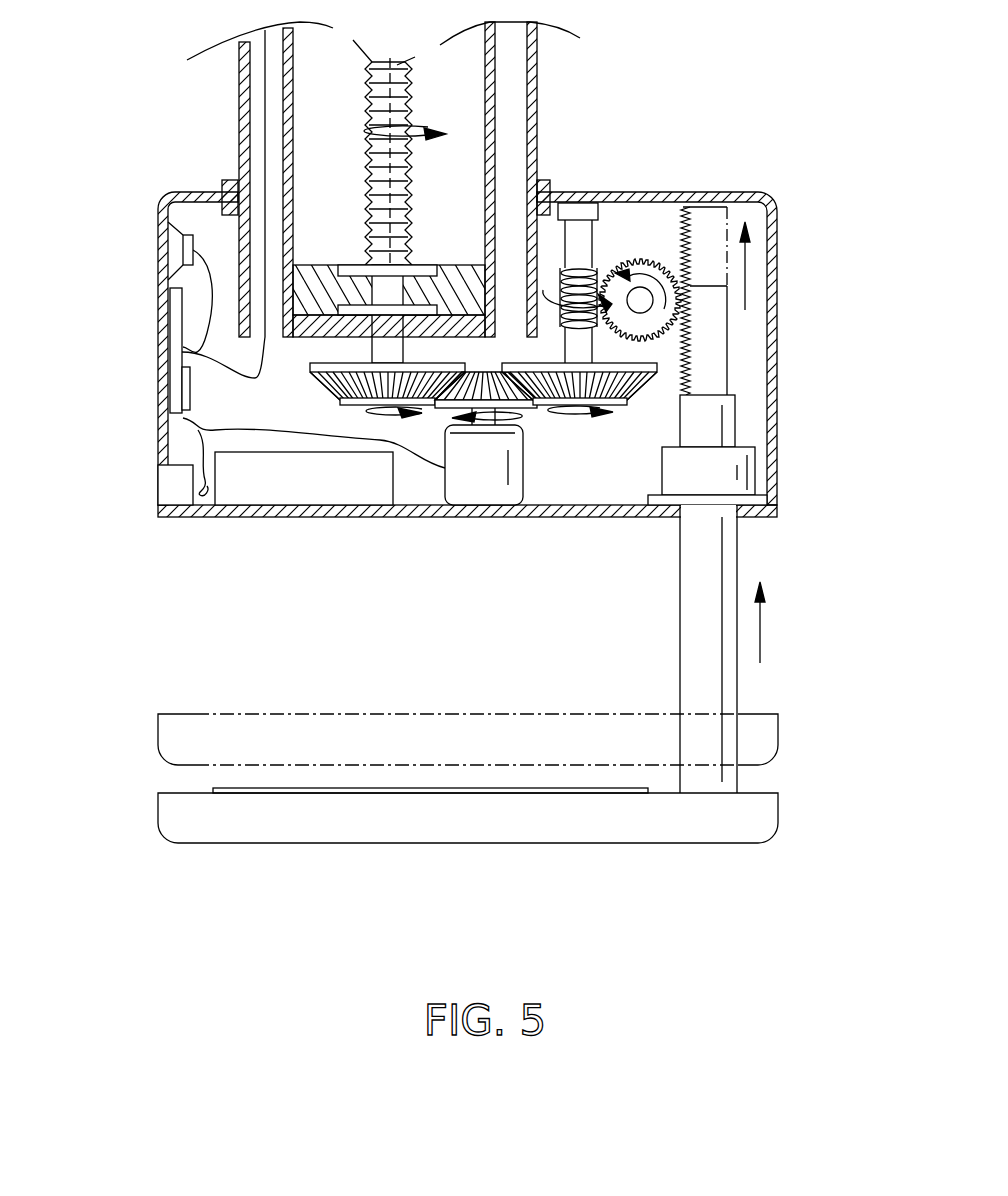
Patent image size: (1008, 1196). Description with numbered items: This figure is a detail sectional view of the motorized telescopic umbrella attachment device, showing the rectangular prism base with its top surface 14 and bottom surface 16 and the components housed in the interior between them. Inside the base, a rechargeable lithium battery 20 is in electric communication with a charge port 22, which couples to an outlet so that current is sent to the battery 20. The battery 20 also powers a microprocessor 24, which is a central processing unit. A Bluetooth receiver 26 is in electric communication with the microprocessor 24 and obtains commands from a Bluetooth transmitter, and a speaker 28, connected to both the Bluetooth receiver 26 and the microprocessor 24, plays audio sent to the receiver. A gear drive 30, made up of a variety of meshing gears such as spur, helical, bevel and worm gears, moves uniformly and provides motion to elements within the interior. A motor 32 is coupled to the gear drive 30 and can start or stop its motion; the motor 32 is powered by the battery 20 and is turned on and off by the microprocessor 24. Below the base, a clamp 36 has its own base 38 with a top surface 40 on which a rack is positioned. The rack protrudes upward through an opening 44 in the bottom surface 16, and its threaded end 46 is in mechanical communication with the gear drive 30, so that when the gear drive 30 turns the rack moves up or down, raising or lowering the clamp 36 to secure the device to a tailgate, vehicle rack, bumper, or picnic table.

The top surface 14 is at (562, 192).
The bottom surface 16 is at (600, 517).
The battery 20 is at (302, 482).
The charge port 22 is at (177, 485).
The microprocessor 24 is at (176, 335).
The Bluetooth receiver 26 is at (186, 385).
The speaker 28 is at (172, 244).
The gear drive 30 is at (584, 302).
The motor 32 is at (477, 482).
The clamp 36 is at (766, 680).
The base 38 is at (450, 815).
The top surface 40 is at (342, 792).
The opening 44 is at (752, 527).
The end 46 is at (715, 338).